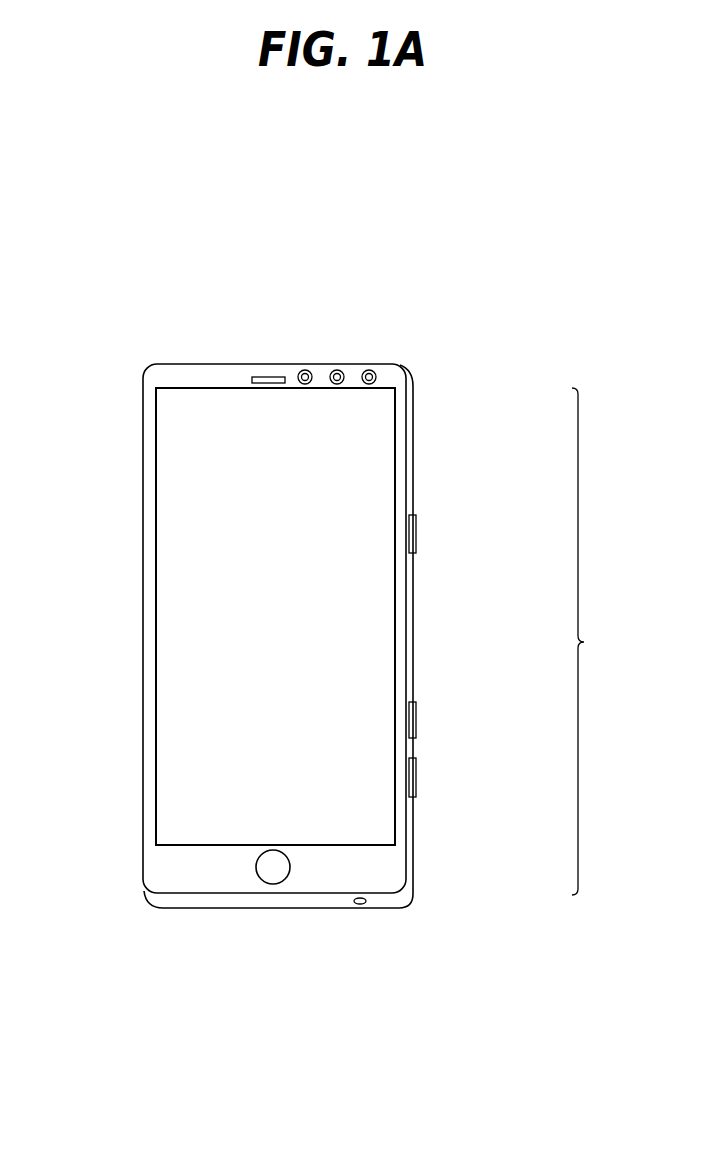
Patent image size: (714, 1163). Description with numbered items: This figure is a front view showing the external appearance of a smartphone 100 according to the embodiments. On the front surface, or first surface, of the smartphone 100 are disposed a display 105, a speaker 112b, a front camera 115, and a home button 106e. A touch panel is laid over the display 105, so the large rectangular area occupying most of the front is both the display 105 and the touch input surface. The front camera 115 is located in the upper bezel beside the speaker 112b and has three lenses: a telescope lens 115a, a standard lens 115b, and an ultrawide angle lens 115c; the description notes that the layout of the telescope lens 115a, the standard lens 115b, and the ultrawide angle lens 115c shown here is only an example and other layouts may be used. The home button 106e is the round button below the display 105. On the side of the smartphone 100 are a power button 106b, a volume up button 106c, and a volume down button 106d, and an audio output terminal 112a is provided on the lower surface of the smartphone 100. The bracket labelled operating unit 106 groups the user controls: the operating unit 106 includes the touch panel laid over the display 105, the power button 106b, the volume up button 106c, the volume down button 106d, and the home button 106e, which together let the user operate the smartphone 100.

The smartphone 100 is at (143, 523).
The display 105 is at (388, 414).
The operating unit 106 is at (605, 641).
The power button 106b is at (416, 528).
The volume up button 106c is at (416, 717).
The volume down button 106d is at (416, 773).
The home button 106e is at (290, 870).
The audio output terminal 112a is at (352, 905).
The speaker 112b is at (255, 376).
The front camera 115 is at (340, 302).
The telescope lens 115a is at (334, 369).
The standard lens 115b is at (305, 369).
The ultrawide angle lens 115c is at (400, 322).